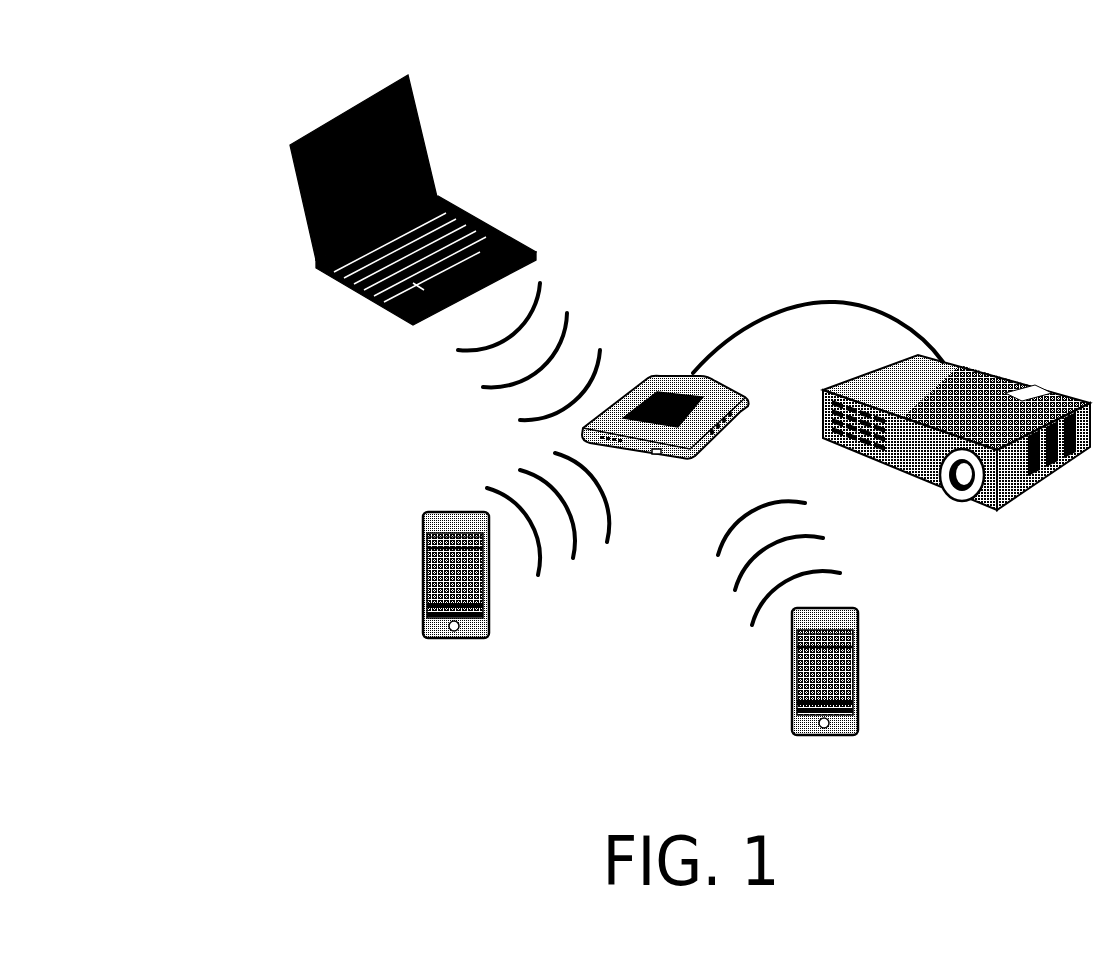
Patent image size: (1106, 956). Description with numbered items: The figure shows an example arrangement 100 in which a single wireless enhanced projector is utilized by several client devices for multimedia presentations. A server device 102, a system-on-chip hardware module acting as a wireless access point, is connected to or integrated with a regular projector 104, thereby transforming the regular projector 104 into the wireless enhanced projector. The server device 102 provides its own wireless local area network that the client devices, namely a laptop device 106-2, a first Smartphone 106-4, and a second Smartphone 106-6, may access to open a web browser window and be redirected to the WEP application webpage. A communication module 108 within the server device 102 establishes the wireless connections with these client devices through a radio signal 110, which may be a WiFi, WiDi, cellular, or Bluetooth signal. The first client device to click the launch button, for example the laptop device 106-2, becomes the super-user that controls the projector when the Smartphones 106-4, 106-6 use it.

The arrangement 100 is at (163, 55).
The server device 102 is at (632, 370).
The regular projector 104 is at (1047, 373).
The laptop device 106-2 is at (452, 165).
The first Smartphone 106-4 is at (402, 577).
The second Smartphone 106-6 is at (937, 681).
The communication module 108 is at (672, 499).
The radio signal 110 is at (428, 423).